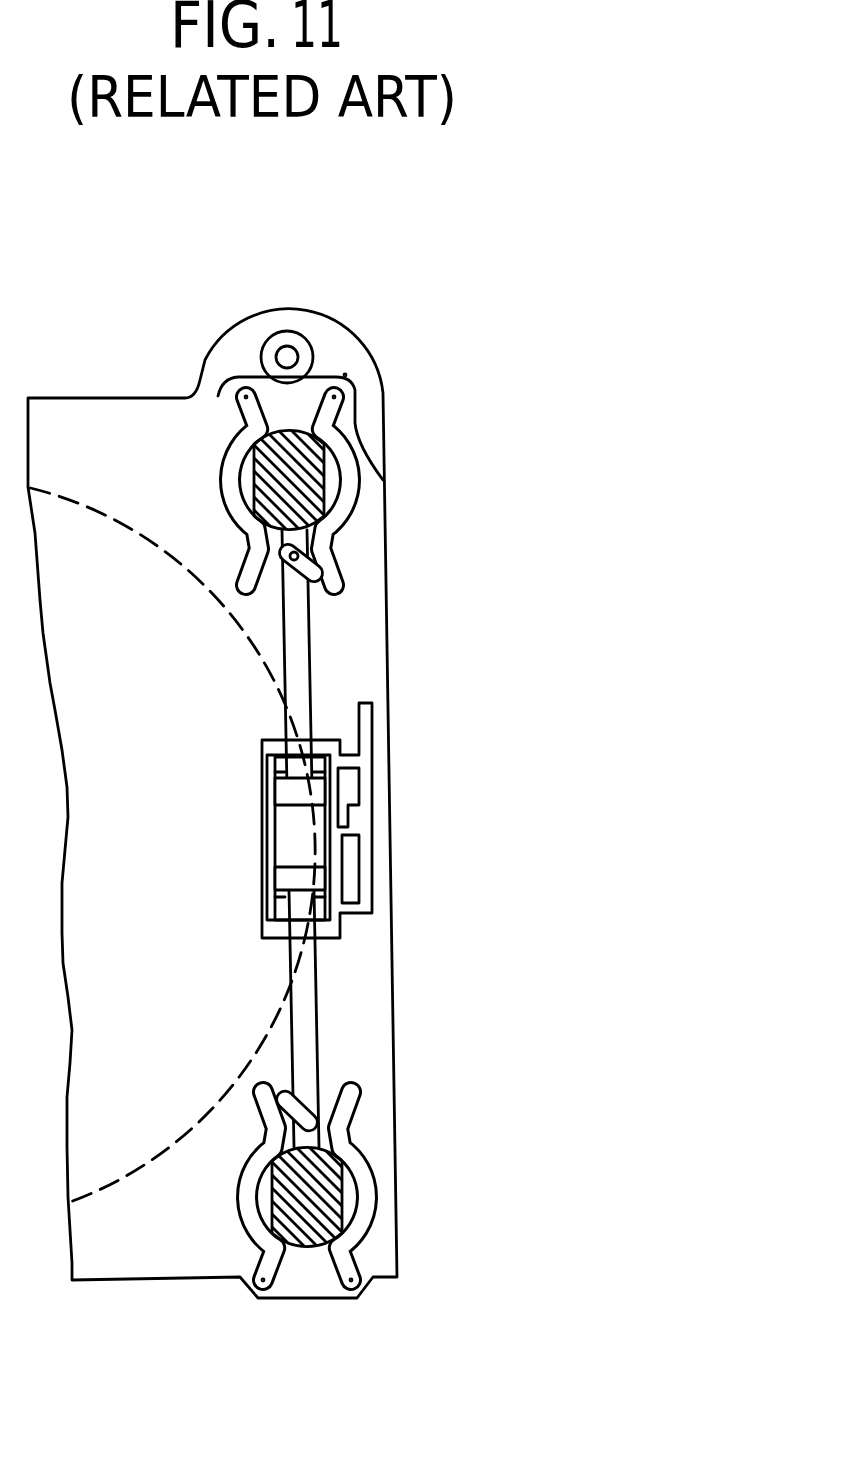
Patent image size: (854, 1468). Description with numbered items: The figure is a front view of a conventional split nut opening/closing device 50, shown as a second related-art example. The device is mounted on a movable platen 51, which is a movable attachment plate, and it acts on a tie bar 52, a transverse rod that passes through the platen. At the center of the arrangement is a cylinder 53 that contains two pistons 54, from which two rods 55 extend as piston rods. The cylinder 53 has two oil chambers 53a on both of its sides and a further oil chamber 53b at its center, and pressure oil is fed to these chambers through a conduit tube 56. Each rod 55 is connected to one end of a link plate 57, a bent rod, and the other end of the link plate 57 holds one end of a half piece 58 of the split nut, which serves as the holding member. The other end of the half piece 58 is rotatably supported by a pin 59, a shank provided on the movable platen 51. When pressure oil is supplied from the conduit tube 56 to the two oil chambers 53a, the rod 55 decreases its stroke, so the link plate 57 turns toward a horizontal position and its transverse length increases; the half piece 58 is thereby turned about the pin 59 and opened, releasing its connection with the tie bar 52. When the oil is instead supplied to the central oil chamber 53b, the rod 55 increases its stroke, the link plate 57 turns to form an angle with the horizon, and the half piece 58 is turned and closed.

The opening/closing device 50 is at (345, 375).
The movable platen 51 is at (104, 398).
The tie bar 52 is at (302, 492).
The cylinder 53 is at (265, 790).
The oil chambers 53a is at (275, 762).
The oil chamber 53b is at (302, 837).
The pistons 54 is at (297, 877).
The rods 55 is at (300, 633).
The conduit tube 56 is at (363, 818).
The link plate 57 is at (283, 579).
The half piece 58 is at (345, 523).
The pin 59 is at (350, 383).